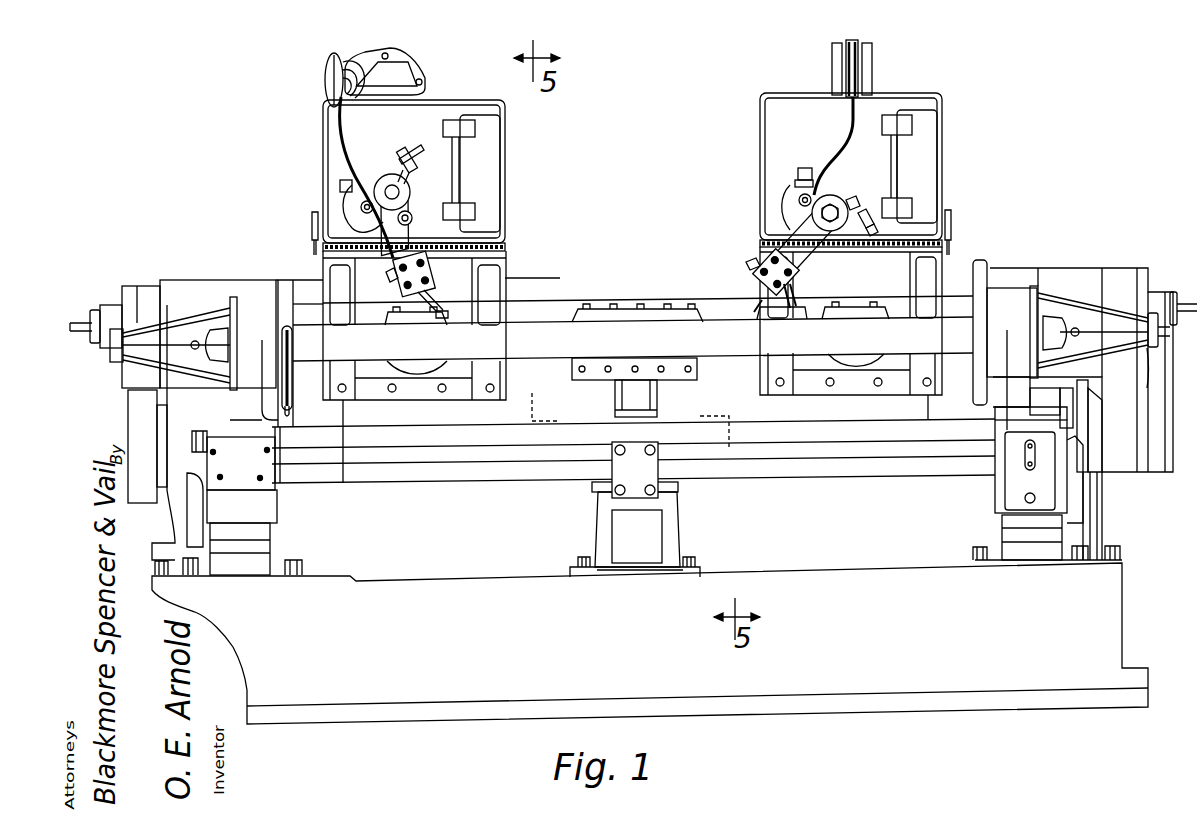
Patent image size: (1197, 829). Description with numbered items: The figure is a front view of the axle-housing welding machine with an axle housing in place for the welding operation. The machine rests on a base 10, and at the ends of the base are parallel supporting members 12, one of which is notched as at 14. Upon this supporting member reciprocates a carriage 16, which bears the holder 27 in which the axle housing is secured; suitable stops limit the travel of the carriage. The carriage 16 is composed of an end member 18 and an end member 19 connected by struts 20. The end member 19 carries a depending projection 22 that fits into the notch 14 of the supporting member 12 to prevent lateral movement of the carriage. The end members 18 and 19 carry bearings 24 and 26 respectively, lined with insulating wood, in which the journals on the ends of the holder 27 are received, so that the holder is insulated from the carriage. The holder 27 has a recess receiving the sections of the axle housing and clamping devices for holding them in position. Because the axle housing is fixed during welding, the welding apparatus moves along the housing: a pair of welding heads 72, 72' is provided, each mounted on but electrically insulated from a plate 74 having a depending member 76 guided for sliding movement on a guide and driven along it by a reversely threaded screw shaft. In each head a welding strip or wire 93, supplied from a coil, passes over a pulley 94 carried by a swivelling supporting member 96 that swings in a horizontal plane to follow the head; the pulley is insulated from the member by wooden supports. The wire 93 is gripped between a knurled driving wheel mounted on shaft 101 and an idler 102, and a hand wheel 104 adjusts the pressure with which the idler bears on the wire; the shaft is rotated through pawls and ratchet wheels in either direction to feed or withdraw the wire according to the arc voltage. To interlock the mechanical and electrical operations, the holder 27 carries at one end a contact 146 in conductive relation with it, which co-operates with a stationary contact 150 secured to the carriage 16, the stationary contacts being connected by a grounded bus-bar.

The base 10 is at (1103, 618).
The supporting members 12 is at (215, 512).
The notch 14 is at (1030, 477).
The carriage 16 is at (476, 486).
The end member 18 is at (228, 440).
The end member 19 is at (1012, 421).
The struts 20 is at (516, 440).
The depending projection 22 is at (1013, 477).
The bearing 24 is at (259, 285).
The bearing 26 is at (1012, 296).
The holder 27 is at (557, 320).
The welding head 72 is at (394, 177).
The welding head 72' is at (836, 174).
The plate 74 is at (502, 256).
The depending member 76 is at (503, 290).
The welding strip or wire 93 is at (340, 131).
The pulley 94 is at (326, 66).
The supporting member 96 is at (405, 66).
The shaft 101 is at (369, 200).
The idler 102 is at (838, 208).
The hand wheel 104 is at (868, 238).
The contact 146 is at (294, 352).
The stationary contact 150 is at (290, 412).